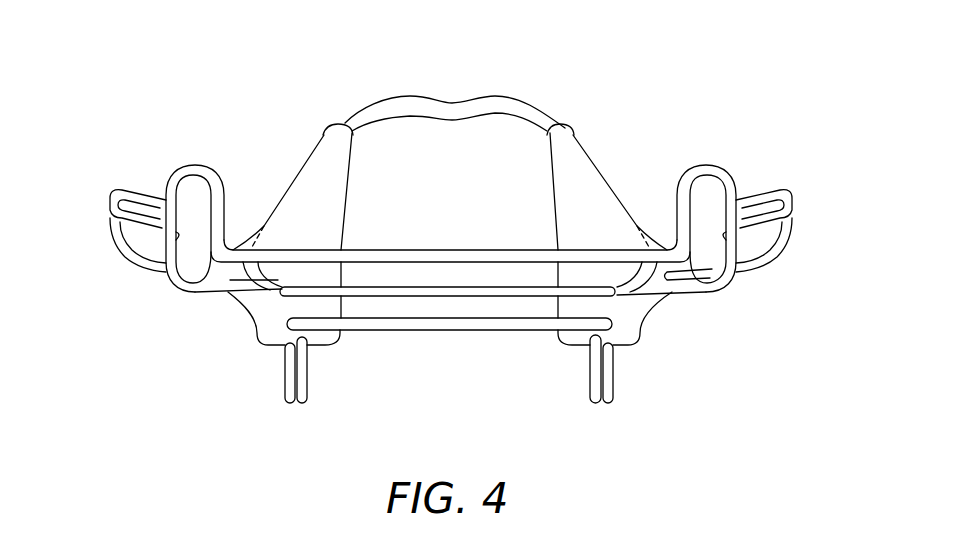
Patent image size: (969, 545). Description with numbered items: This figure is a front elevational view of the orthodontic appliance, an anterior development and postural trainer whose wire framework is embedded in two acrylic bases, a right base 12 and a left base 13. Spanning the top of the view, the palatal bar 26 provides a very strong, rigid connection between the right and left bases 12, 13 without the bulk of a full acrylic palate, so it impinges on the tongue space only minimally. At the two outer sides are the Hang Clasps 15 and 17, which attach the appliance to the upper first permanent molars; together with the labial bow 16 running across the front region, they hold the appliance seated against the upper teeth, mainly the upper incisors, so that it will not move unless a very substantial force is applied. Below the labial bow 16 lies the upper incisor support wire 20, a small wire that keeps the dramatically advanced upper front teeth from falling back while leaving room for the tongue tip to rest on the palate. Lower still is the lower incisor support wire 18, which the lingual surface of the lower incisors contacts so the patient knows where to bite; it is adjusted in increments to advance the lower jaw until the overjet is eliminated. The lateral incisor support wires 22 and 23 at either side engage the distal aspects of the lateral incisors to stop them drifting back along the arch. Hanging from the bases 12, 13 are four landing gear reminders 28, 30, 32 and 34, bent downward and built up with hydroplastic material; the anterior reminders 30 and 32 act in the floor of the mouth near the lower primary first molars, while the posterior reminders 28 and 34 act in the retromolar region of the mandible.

The right base 12 is at (645, 313).
The left base 13 is at (248, 312).
The Hang Clasp 15 is at (792, 222).
The labial bow 16 is at (448, 248).
The Hang Clasp 17 is at (108, 215).
The lower incisor support wire 18 is at (480, 330).
The upper incisor support wire 20 is at (400, 296).
The lateral incisor support wire 22 is at (190, 293).
The lateral incisor support wire 23 is at (680, 292).
The palatal bar 26 is at (450, 100).
The landing gear reminder 28 is at (589, 398).
The landing gear reminder 30 is at (616, 398).
The landing gear reminder 32 is at (310, 398).
The landing gear reminder 34 is at (283, 398).